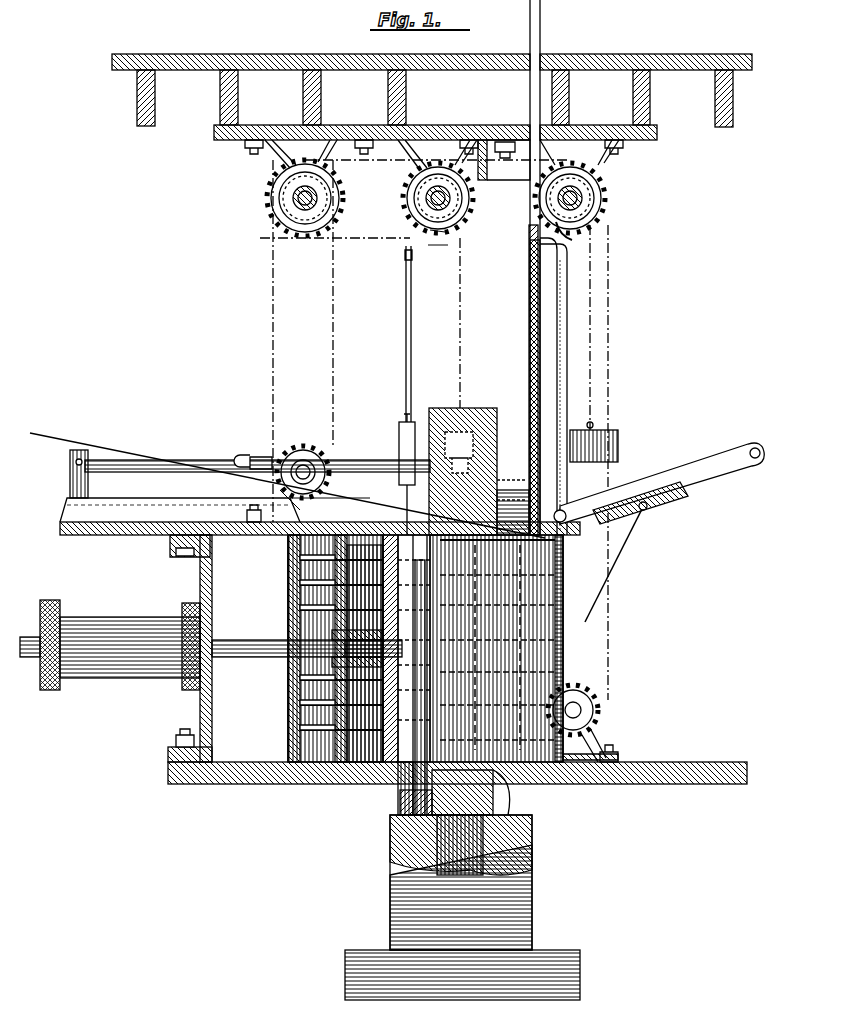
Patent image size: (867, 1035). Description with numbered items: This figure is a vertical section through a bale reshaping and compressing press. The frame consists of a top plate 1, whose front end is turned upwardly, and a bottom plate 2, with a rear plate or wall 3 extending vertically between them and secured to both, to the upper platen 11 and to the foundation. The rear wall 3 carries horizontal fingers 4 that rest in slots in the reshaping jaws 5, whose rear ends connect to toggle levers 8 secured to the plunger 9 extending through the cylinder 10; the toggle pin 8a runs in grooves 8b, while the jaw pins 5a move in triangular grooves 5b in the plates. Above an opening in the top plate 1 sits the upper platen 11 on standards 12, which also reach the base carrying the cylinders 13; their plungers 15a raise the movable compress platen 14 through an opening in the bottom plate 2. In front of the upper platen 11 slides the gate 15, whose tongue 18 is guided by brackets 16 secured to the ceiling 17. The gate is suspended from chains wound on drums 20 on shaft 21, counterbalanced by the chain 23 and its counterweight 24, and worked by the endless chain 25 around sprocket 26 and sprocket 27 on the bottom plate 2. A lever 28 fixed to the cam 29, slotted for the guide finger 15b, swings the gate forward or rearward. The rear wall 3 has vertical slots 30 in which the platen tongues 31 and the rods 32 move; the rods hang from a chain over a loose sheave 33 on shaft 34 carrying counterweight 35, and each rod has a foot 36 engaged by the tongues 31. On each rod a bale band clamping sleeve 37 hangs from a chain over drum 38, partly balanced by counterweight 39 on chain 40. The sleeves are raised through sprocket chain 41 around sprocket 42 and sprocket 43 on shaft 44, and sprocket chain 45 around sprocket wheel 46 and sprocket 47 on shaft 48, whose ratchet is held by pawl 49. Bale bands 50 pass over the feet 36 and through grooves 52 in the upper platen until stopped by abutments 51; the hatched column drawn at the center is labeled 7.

The top plate 1 is at (140, 558).
The bottom plate 2 is at (236, 784).
The rear plate or wall 3 is at (399, 648).
The fingers 4 is at (407, 788).
The reshaping jaws 5 is at (290, 718).
The pins 5a is at (545, 784).
The triangular grooves 5b is at (575, 784).
The cylinder cap 7 is at (470, 540).
The toggle levers 8 is at (288, 572).
The pin 8a is at (358, 795).
The grooves 8b is at (250, 762).
The plunger 9 is at (238, 658).
The cylinder 10 is at (115, 620).
The upper platen 11 is at (490, 476).
The posts or standards 12 is at (478, 652).
The cylinders 13 is at (535, 876).
The movable compress platen 14 is at (493, 804).
The vertically sliding gate 15 is at (529, 335).
The plungers 15a is at (455, 856).
The guide finger 15b is at (568, 333).
The brackets 16 is at (508, 170).
The ceiling 17 is at (578, 128).
The tongue 18 is at (540, 18).
The drums 20 is at (598, 226).
The shaft 21 is at (578, 196).
The chain 23 is at (592, 280).
The weight 24 is at (618, 440).
The endless chain 25 is at (610, 368).
The sprocket 26 is at (606, 203).
The sprocket 27 is at (598, 712).
The lever 28 is at (680, 478).
The cam 29 is at (312, 230).
The vertical slots 30 is at (428, 718).
The tongues 31 is at (412, 805).
The rods or posts 32 is at (412, 363).
The loose sheave 33 is at (440, 232).
The shaft 34 is at (420, 196).
The counterweight 35 is at (486, 408).
The foot 36 is at (414, 648).
The bale band clamping sleeve 37 is at (399, 452).
The drum 38 is at (455, 238).
The counterweight 39 is at (478, 448).
The chain 40 is at (461, 330).
The sprocket chain 41 is at (335, 233).
The sprocket 42 is at (465, 215).
The sprocket 43 is at (268, 206).
The shaft 44 is at (285, 195).
The sprocket chain 45 is at (333, 350).
The sprocket wheel 46 is at (283, 222).
The sprocket 47 is at (293, 446).
The shaft 48 is at (316, 480).
The pawl 49 is at (310, 448).
The bale bands 50 is at (125, 452).
The abutments 51 is at (513, 511).
The grooves 52 is at (290, 626).